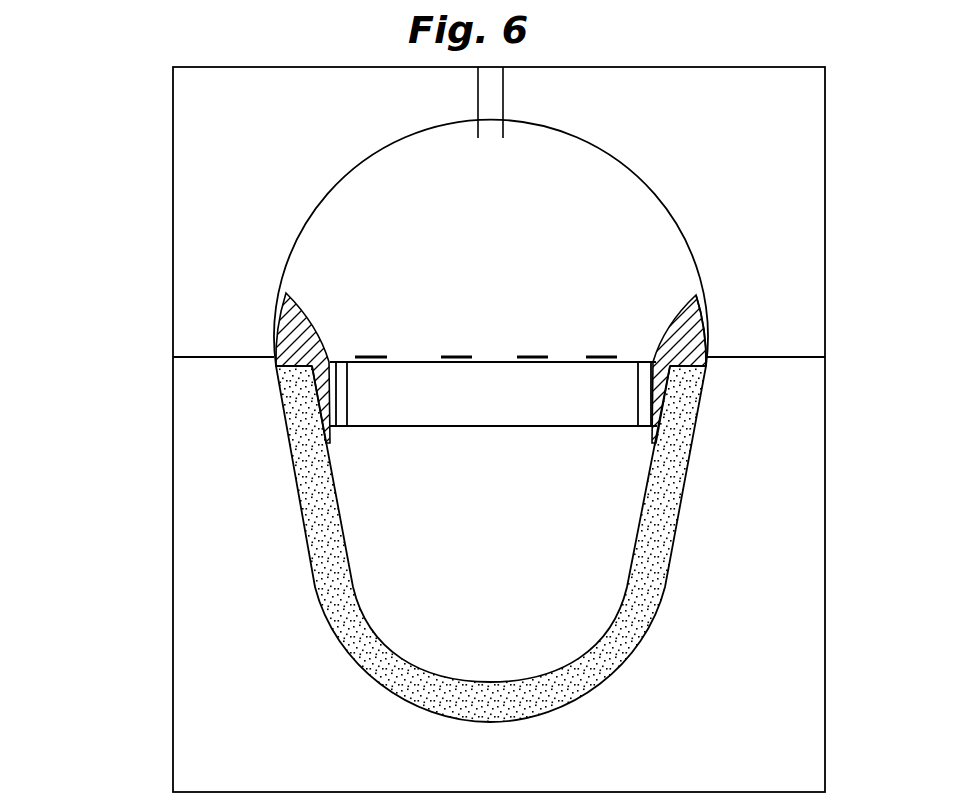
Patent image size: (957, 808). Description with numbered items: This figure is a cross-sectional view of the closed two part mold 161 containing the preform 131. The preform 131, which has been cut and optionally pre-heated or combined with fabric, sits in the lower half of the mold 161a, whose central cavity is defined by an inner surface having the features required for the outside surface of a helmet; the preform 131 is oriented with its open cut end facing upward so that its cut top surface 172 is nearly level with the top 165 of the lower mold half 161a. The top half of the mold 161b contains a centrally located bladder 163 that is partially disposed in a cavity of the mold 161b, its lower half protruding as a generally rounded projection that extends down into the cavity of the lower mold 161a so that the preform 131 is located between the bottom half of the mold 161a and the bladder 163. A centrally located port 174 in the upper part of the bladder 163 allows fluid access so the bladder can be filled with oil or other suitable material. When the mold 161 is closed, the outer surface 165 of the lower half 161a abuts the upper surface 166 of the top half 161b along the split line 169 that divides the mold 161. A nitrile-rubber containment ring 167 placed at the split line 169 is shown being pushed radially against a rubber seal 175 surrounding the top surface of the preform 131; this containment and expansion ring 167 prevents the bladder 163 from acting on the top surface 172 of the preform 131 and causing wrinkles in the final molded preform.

The two part mold 161 is at (115, 64).
The lower half of the mold 161a is at (810, 697).
The top half of the mold 161b is at (802, 258).
The bladder 163 is at (650, 225).
The top of the mold 165 is at (202, 357).
The upper surface 166 is at (187, 358).
The containment ring 167 is at (607, 415).
The split line 169 is at (373, 356).
The top surface 172 is at (692, 355).
The port 174 is at (493, 92).
The rubber seal 175 is at (697, 322).
The preform 131 is at (327, 590).